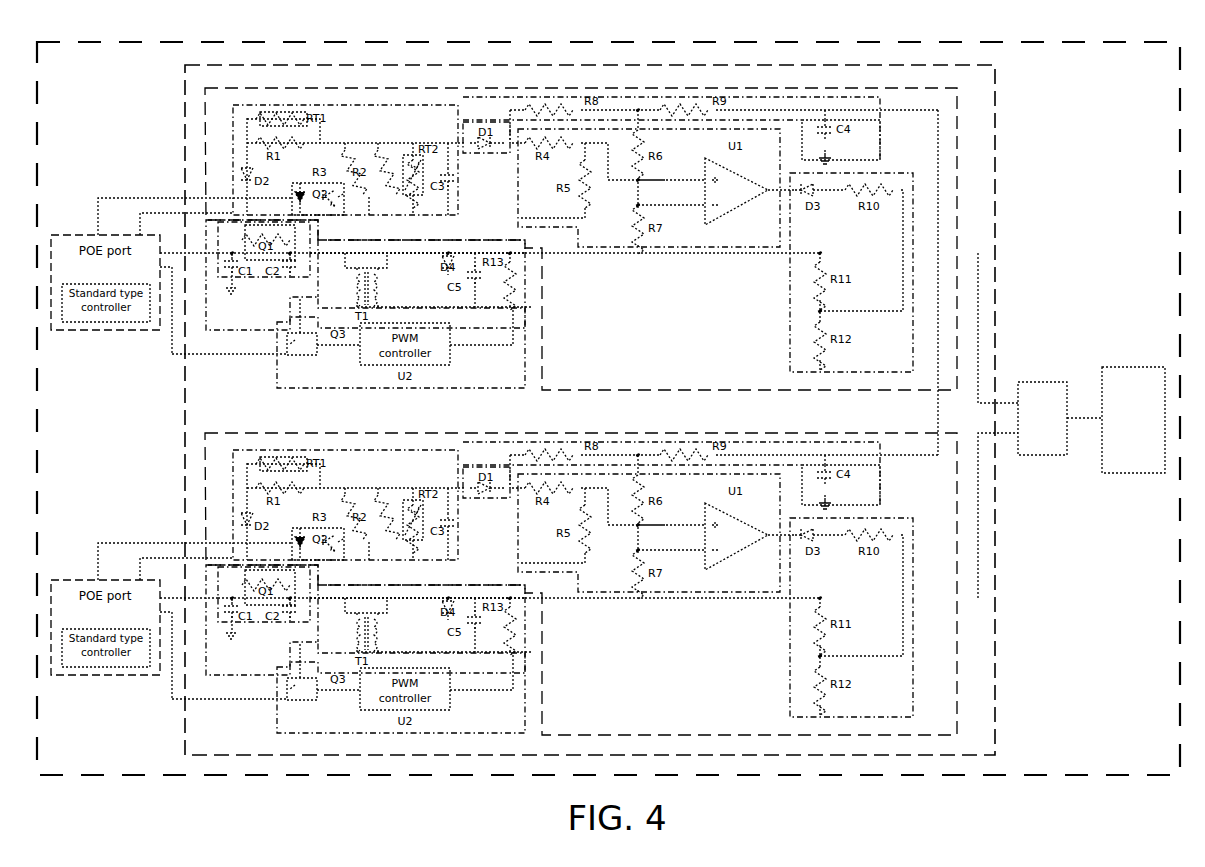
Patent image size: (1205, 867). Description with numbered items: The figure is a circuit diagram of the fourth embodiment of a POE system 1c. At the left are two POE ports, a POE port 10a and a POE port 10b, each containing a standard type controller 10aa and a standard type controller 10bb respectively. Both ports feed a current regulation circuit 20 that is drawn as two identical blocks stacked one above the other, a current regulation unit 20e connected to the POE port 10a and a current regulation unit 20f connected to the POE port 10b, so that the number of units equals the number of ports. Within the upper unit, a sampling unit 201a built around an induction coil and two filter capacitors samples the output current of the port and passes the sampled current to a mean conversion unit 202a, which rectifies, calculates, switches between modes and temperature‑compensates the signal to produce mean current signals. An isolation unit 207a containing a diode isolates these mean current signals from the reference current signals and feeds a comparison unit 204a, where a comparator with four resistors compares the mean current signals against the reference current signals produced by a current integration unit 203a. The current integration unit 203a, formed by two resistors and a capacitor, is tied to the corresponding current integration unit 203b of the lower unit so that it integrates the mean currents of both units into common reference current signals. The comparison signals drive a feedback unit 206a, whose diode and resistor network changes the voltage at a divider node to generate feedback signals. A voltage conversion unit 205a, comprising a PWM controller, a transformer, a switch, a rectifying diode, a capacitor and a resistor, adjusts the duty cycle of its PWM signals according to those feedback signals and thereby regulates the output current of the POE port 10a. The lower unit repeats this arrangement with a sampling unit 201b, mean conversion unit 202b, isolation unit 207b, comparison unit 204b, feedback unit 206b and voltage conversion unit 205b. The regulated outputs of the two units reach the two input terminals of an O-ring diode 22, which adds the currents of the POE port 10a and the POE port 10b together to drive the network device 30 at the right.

The POE system 1c is at (660, 42).
The current regulation circuit 20 is at (650, 65).
The current regulation unit 20e is at (515, 88).
The current regulation unit 20f is at (558, 578).
The mean conversion unit 202a is at (470, 103).
The mean conversion unit 202b is at (373, 497).
The isolation unit 207a is at (475, 153).
The isolation unit 207b is at (494, 492).
The comparison unit 204a is at (700, 247).
The comparison unit 204b is at (698, 525).
The current integration unit 203a is at (878, 100).
The current integration unit 203b is at (695, 475).
The sampling unit 201a is at (318, 237).
The sampling unit 201b is at (290, 602).
The feedback unit 206a is at (880, 173).
The feedback unit 206b is at (867, 607).
The voltage conversion unit 205a is at (276, 372).
The voltage conversion unit 205b is at (348, 691).
The POE port 10a is at (105, 296).
The POE port 10b is at (106, 641).
The standard type controller 10aa is at (110, 284).
The standard type controller 10bb is at (111, 628).
The O-ring diode 22 is at (1040, 382).
The network device 30 is at (1130, 367).